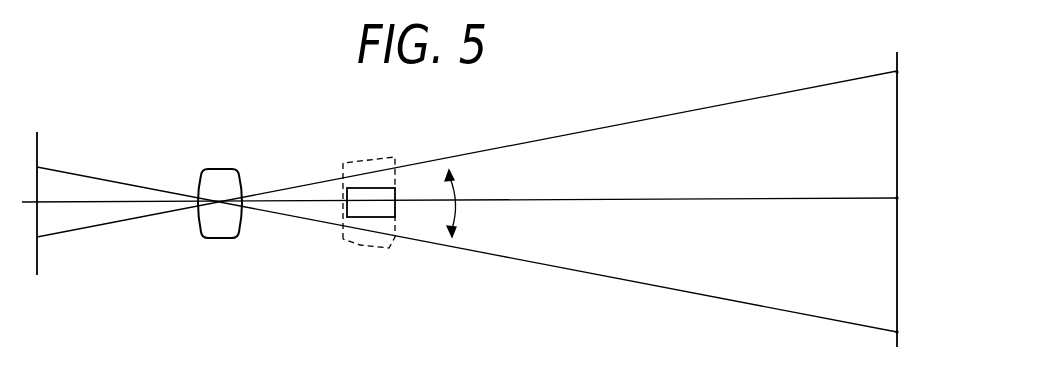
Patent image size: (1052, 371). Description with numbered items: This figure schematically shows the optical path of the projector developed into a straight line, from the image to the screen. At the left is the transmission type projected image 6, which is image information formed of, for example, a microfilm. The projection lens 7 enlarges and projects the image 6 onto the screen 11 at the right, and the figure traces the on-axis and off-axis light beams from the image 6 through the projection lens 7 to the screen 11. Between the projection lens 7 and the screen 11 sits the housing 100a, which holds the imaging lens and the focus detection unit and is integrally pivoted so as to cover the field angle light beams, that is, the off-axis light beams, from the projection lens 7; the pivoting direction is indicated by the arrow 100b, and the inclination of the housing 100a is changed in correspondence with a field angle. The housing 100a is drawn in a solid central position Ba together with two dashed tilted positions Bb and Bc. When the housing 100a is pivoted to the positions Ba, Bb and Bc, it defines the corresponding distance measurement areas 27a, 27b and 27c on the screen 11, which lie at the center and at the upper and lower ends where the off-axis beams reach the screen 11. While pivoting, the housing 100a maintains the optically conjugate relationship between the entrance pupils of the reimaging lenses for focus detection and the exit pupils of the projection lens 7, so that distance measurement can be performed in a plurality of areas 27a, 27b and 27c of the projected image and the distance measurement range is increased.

The transmission type projected image 6 is at (38, 149).
The projection lens 7 is at (220, 238).
The housing 100a is at (353, 194).
The arrow 100b is at (460, 191).
The housing position Ba is at (380, 200).
The housing position Bb is at (386, 250).
The housing position Bc is at (364, 159).
The screen 11 is at (897, 107).
The distance measurement area 27a is at (897, 198).
The distance measurement area 27b is at (897, 332).
The distance measurement area 27c is at (897, 72).